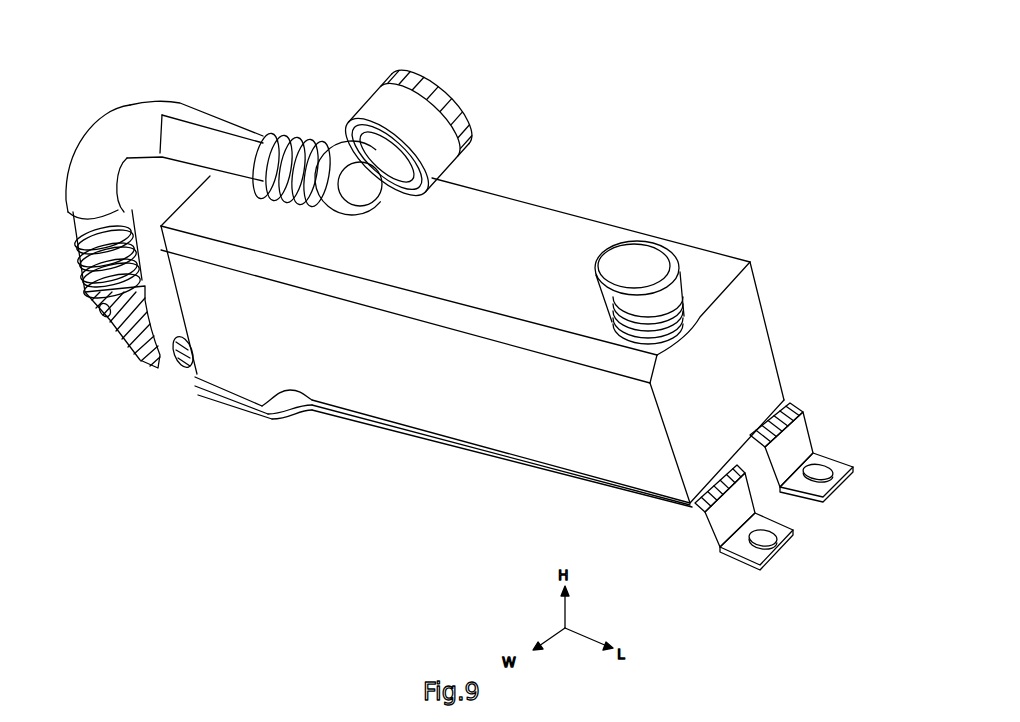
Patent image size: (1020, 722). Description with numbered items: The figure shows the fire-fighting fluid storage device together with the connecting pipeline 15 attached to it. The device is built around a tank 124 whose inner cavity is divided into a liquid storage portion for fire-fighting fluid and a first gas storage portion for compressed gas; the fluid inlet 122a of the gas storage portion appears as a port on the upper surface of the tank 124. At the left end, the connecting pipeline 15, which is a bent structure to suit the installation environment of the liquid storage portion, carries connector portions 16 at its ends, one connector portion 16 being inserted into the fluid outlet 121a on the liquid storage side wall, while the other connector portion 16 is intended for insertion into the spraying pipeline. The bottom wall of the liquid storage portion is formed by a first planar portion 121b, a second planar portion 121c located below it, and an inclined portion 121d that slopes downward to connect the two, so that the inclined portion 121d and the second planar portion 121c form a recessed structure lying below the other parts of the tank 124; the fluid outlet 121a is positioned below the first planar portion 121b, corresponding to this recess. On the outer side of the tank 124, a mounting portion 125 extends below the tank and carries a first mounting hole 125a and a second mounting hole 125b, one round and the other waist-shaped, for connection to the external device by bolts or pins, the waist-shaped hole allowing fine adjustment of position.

The connecting pipeline 15 is at (130, 105).
The connector portion 16 is at (410, 87).
The tank 124 is at (463, 197).
The fluid inlet 122a is at (647, 250).
The fluid outlet 121a is at (160, 367).
The first planar portion 121b is at (483, 453).
The second planar portion 121c is at (220, 407).
The inclined portion 121d is at (290, 407).
The mounting portion 125 is at (716, 533).
The first mounting hole 125a is at (770, 550).
The second mounting hole 125b is at (845, 481).